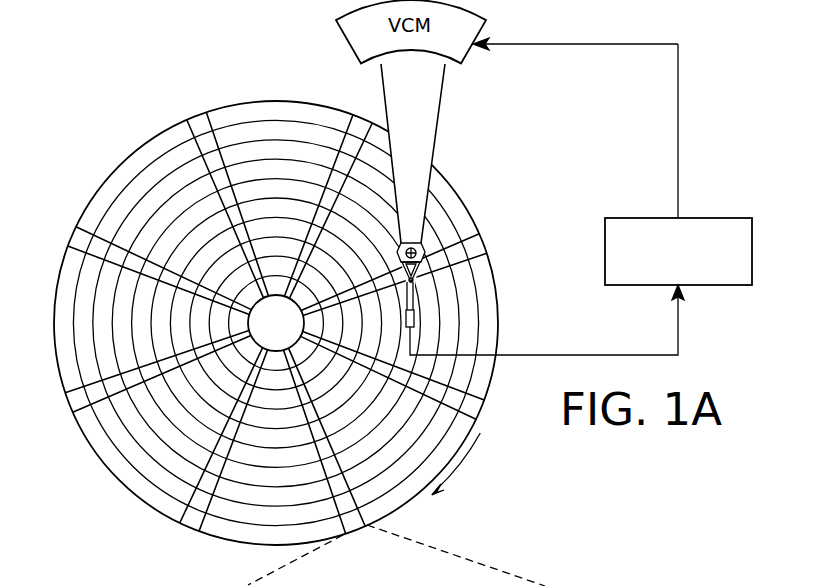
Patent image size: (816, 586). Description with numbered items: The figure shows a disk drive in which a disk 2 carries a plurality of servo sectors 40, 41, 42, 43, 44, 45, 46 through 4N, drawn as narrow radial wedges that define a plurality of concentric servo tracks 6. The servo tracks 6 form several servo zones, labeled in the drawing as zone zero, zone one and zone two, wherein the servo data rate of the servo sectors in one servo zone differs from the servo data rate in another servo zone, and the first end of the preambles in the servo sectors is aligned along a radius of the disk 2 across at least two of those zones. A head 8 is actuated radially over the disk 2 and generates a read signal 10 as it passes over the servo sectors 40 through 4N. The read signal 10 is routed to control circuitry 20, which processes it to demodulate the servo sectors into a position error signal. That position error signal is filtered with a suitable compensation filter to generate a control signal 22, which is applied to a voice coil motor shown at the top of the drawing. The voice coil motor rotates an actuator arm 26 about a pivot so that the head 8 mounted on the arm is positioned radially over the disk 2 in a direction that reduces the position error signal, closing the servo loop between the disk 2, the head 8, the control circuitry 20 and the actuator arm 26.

The disk 2 is at (293, 321).
The servo tracks 6 is at (275, 133).
The servo sector 40 is at (360, 122).
The servo sector 41 is at (487, 243).
The servo sector 42 is at (479, 408).
The servo sector 43 is at (325, 441).
The servo sector 44 is at (192, 519).
The servo sector 45 is at (71, 413).
The servo sector 46 is at (75, 232).
The servo sector 4N is at (199, 122).
The head 8 is at (416, 318).
The read signal 10 is at (561, 353).
The control circuitry 20 is at (727, 218).
The control signal 22 is at (680, 92).
The actuator arm 26 is at (434, 108).